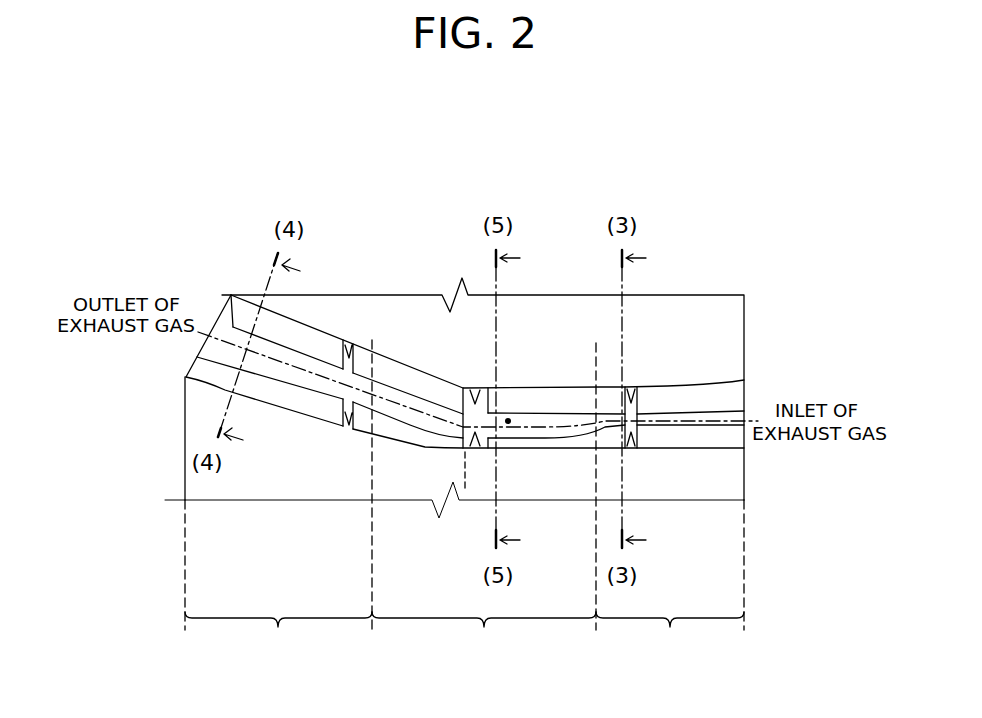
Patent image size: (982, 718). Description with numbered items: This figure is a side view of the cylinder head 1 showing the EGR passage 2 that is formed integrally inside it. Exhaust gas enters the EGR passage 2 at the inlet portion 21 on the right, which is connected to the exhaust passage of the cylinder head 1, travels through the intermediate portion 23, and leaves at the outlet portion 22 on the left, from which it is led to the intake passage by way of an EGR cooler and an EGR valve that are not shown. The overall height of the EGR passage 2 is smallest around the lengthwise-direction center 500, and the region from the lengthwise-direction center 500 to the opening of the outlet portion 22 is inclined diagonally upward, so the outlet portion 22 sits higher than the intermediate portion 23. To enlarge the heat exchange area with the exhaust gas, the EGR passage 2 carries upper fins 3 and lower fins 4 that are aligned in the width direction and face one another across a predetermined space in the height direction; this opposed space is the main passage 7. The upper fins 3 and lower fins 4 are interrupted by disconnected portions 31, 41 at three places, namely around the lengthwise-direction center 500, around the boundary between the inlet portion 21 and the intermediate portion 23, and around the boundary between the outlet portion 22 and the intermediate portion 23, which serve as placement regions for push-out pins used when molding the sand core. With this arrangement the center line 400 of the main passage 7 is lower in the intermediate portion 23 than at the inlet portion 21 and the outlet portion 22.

The cylinder head 1 is at (307, 509).
The EGR passage 2 is at (399, 352).
The upper fins 3 is at (303, 343).
The disconnected portions 31 is at (355, 345).
The lower fins 4 is at (260, 393).
The disconnected portions 41 is at (342, 412).
The main passage 7 is at (508, 418).
The center line 400 is at (532, 427).
The lengthwise-direction center 500 is at (463, 468).
The inlet portion 21 is at (670, 635).
The outlet portion 22 is at (278, 635).
The intermediate portion 23 is at (484, 635).